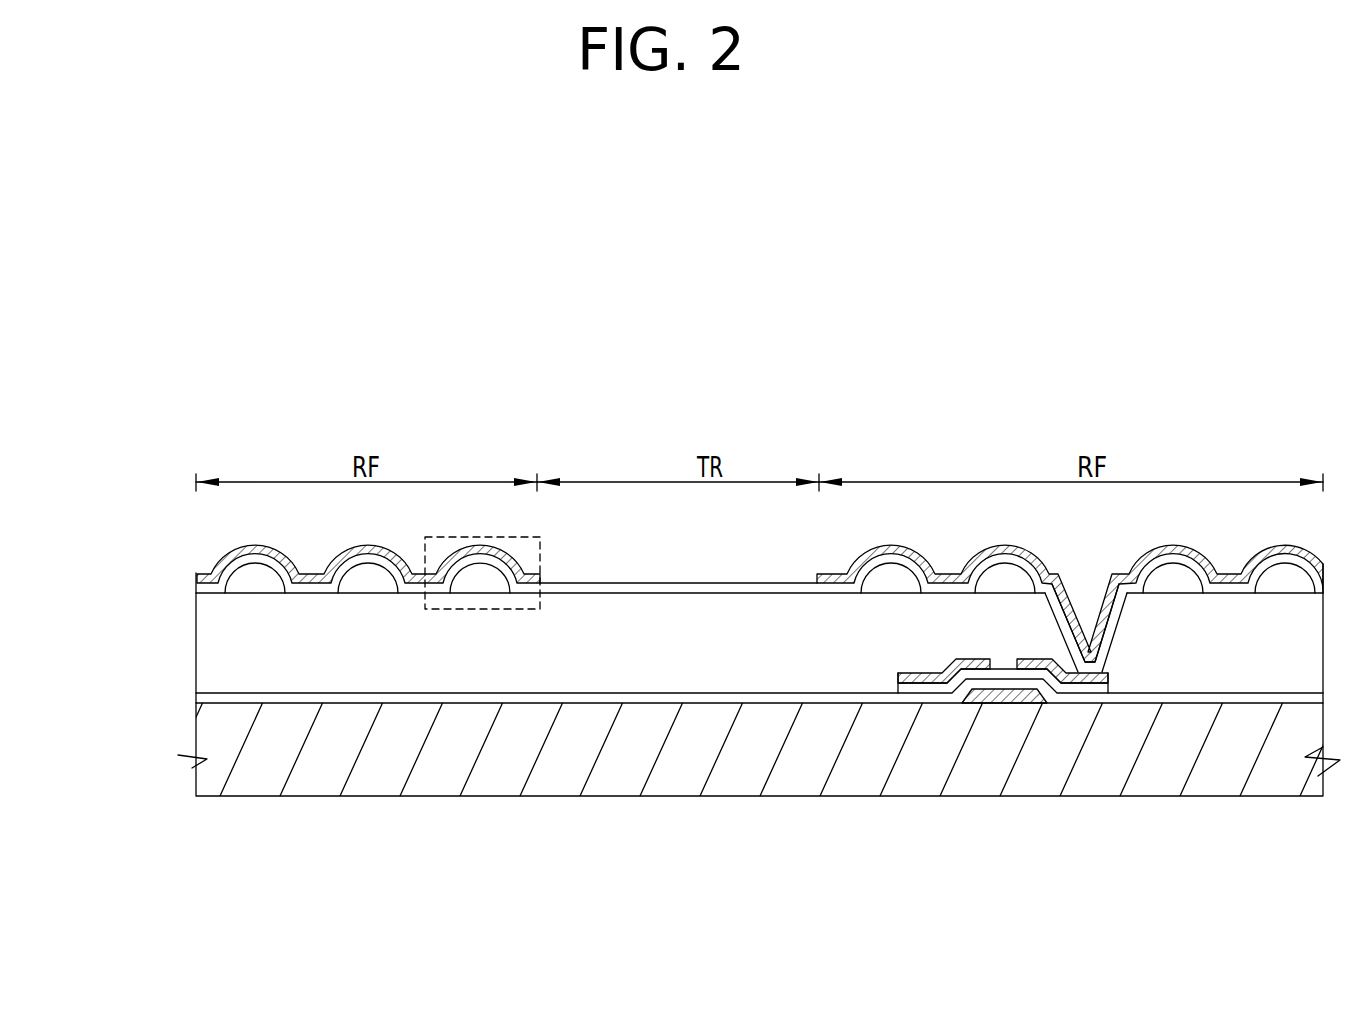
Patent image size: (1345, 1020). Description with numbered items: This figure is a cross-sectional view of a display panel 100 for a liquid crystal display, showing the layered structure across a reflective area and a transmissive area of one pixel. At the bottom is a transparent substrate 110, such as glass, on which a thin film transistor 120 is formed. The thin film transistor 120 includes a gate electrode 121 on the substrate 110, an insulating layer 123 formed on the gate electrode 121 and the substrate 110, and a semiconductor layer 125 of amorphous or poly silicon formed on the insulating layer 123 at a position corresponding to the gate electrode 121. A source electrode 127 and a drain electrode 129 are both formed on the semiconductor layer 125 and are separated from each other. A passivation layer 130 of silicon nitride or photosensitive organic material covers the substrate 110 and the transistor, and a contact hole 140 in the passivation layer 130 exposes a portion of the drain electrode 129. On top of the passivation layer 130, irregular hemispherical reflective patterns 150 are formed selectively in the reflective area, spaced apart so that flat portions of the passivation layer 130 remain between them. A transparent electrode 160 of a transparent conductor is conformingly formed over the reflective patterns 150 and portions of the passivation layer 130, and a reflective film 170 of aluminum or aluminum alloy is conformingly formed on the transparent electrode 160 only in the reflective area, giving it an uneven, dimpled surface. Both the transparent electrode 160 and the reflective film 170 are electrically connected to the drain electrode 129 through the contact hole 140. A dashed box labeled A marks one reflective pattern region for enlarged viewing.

The display panel 100 is at (763, 264).
The substrate 110 is at (208, 738).
The thin film transistor 120 is at (759, 784).
The gate electrode 121 is at (983, 703).
The insulating layer 123 is at (1165, 693).
The semiconductor layer 125 is at (1063, 688).
The source electrode 127 is at (922, 693).
The drain electrode 129 is at (1070, 758).
The passivation layer 130 is at (208, 668).
The contact hole 140 is at (1076, 592).
The reflective pattern 150 is at (365, 583).
The transparent electrode 160 is at (198, 587).
The reflective film 170 is at (197, 578).
The enlarged region A is at (472, 612).